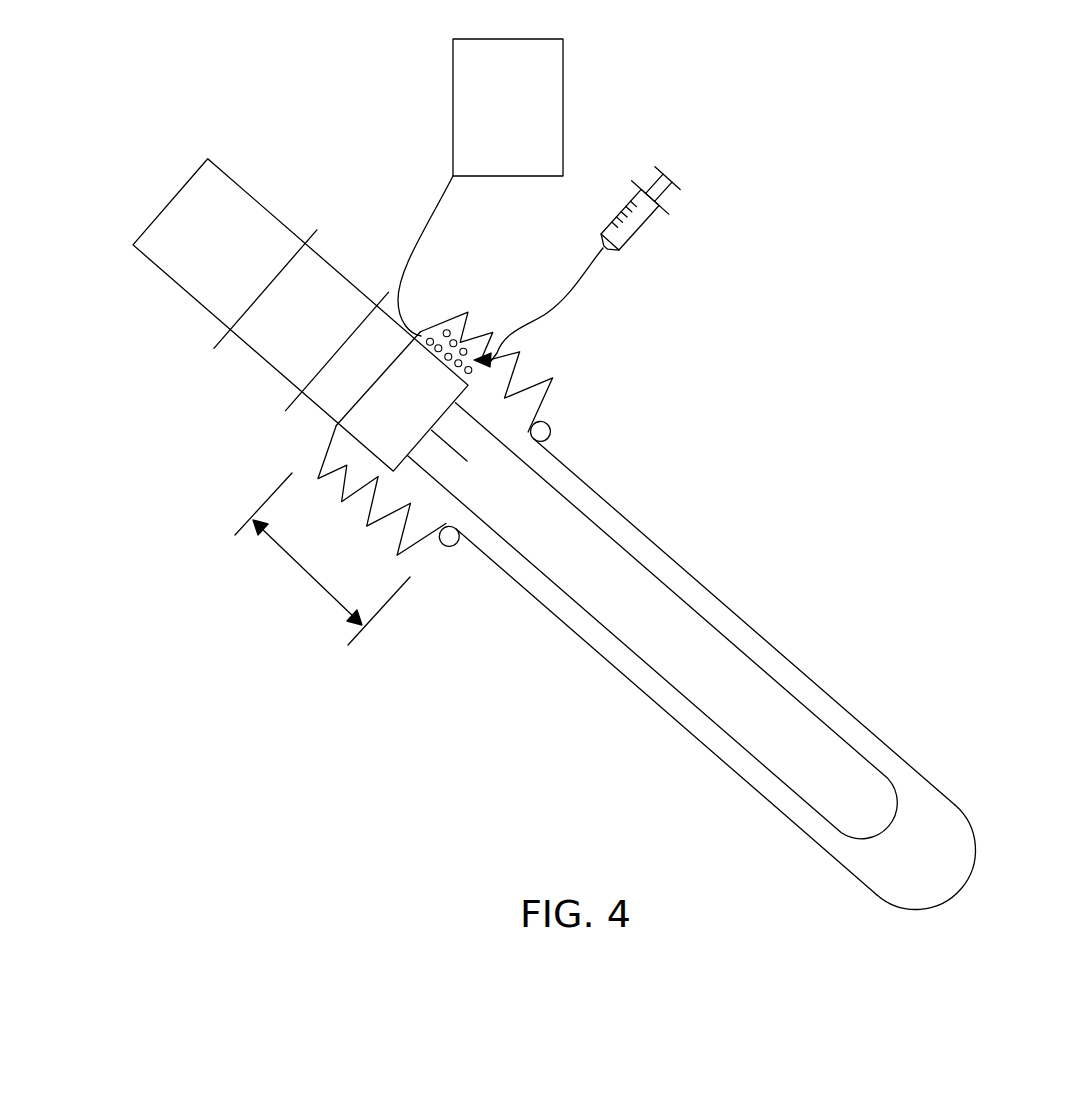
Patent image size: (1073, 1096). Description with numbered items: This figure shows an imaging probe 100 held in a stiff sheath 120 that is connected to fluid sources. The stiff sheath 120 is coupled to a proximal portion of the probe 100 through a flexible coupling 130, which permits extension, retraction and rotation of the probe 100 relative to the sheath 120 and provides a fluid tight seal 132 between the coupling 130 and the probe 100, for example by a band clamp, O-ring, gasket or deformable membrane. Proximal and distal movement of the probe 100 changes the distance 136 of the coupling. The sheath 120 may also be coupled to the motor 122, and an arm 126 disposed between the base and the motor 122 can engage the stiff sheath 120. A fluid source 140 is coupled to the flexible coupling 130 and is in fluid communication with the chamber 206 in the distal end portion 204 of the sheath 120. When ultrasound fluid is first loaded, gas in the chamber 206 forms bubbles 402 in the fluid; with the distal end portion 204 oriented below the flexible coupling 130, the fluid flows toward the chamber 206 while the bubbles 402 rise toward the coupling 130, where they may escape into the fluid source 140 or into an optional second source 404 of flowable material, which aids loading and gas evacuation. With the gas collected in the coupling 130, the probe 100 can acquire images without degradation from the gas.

The imaging probe 100 is at (684, 695).
The stiff sheath 120 is at (730, 608).
The motor 122 is at (338, 403).
The arm 126 is at (542, 442).
The flexible coupling 130 is at (382, 520).
The fluid tight seal 132 is at (373, 378).
The distance 136 is at (300, 568).
The fluid source 140 is at (595, 280).
The distal end portion 204 is at (953, 885).
The chamber 206 is at (949, 871).
The bubbles 402 is at (553, 379).
The second source of flowable material 404 is at (453, 97).